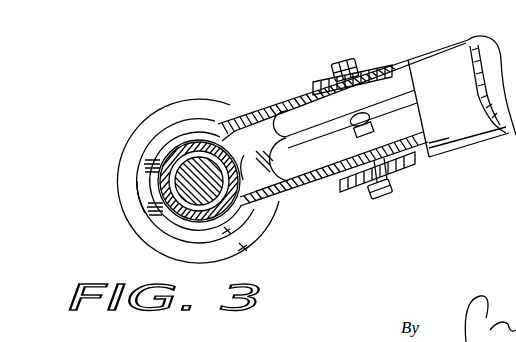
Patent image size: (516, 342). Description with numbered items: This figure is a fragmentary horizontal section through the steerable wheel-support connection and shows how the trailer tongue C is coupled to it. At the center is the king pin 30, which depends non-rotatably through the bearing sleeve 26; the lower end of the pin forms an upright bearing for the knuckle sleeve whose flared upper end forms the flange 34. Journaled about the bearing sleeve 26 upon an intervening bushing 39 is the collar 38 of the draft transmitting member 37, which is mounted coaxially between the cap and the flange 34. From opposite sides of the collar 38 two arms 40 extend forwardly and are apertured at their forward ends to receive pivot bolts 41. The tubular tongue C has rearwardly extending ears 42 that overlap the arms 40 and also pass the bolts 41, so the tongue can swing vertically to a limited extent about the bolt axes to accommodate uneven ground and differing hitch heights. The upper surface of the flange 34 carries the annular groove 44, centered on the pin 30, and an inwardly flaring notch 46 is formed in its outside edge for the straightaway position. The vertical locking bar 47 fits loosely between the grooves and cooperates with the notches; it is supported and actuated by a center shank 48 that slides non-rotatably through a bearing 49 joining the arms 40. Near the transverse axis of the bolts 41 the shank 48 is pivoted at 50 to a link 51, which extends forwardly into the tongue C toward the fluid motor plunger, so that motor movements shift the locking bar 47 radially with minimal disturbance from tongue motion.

The bearing sleeve 26 is at (170, 172).
The king pin 30 is at (143, 235).
The flange 34 is at (123, 192).
The draft transmitting member 37 is at (340, 135).
The collar 38 is at (167, 143).
The bushing 39 is at (157, 208).
The arms 40 is at (293, 108).
The pivot bolts 41 is at (345, 60).
The ears 42 is at (395, 65).
The annular groove 44 is at (227, 230).
The notch 46 is at (272, 200).
The locking bar 47 is at (238, 124).
The shank 48 is at (327, 143).
The bearing 49 is at (315, 125).
The pivot 50 is at (359, 118).
The link 51 is at (396, 113).
The tongue C is at (466, 40).